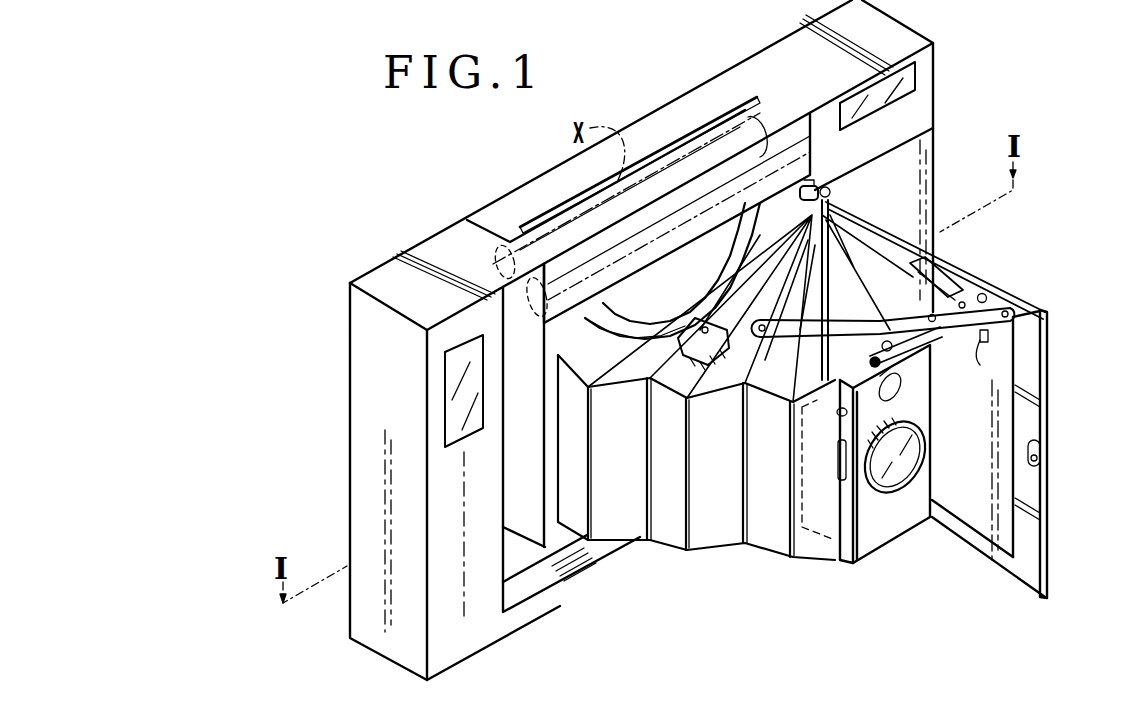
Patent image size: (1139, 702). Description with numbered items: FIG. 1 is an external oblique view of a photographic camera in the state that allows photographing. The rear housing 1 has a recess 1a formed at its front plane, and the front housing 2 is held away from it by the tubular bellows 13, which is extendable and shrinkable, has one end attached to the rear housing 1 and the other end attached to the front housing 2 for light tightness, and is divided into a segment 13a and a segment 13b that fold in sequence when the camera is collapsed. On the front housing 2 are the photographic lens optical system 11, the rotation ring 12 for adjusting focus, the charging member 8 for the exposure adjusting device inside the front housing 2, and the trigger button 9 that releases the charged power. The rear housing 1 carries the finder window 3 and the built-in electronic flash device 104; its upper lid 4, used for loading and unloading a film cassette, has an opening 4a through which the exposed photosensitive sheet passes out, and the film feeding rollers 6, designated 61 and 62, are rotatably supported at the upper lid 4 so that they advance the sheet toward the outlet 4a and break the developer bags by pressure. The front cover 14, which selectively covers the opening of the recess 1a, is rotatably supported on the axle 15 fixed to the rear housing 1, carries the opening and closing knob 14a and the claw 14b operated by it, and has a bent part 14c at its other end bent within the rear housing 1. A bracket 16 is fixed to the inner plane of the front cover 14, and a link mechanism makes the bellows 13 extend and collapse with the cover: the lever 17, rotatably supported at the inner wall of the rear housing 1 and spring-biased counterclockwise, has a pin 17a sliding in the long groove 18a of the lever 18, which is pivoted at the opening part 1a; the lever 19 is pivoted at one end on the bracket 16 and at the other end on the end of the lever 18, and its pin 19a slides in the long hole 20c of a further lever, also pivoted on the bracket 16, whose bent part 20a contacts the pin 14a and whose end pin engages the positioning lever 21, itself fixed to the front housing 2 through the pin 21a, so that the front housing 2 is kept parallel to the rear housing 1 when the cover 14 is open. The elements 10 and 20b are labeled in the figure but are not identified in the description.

The rear housing 1 is at (641, 340).
The recess 1a is at (538, 585).
The front housing 2 is at (885, 454).
The window of a finder 3 is at (908, 80).
The upper lid 4 is at (712, 98).
The opening 4a is at (682, 140).
The film feeding rollers 6 is at (823, 376).
The charging member 8 is at (838, 458).
The trigger button 9 is at (836, 413).
The viewfinder window 10 is at (900, 392).
The photographic lens optical system 11 is at (912, 452).
The rotation ring 12 is at (875, 492).
The bellows 13 is at (696, 457).
The bellows segment 13a is at (852, 268).
The bellows segment 13b is at (620, 527).
The front cover 14 is at (1030, 555).
The opening and closing knob 14a is at (990, 338).
The opening and closing claw 14b is at (1040, 452).
The bent part 14c is at (816, 188).
The axle 15 is at (836, 186).
The bracket 16 is at (1040, 310).
The lever 17 is at (676, 271).
The pin 17a is at (708, 352).
The lever 18 is at (663, 358).
The long groove 18a is at (642, 352).
The lever 19 is at (1000, 310).
The pin 19a is at (937, 314).
The bent part 20a is at (982, 371).
The link bar 20b is at (925, 350).
The long hole 20c is at (984, 295).
The positioning lever 21 is at (875, 395).
The pin 21a is at (896, 386).
The film feeding roller 61 is at (538, 303).
The film feeding roller 62 is at (500, 262).
The electronic flash device 104 is at (450, 386).